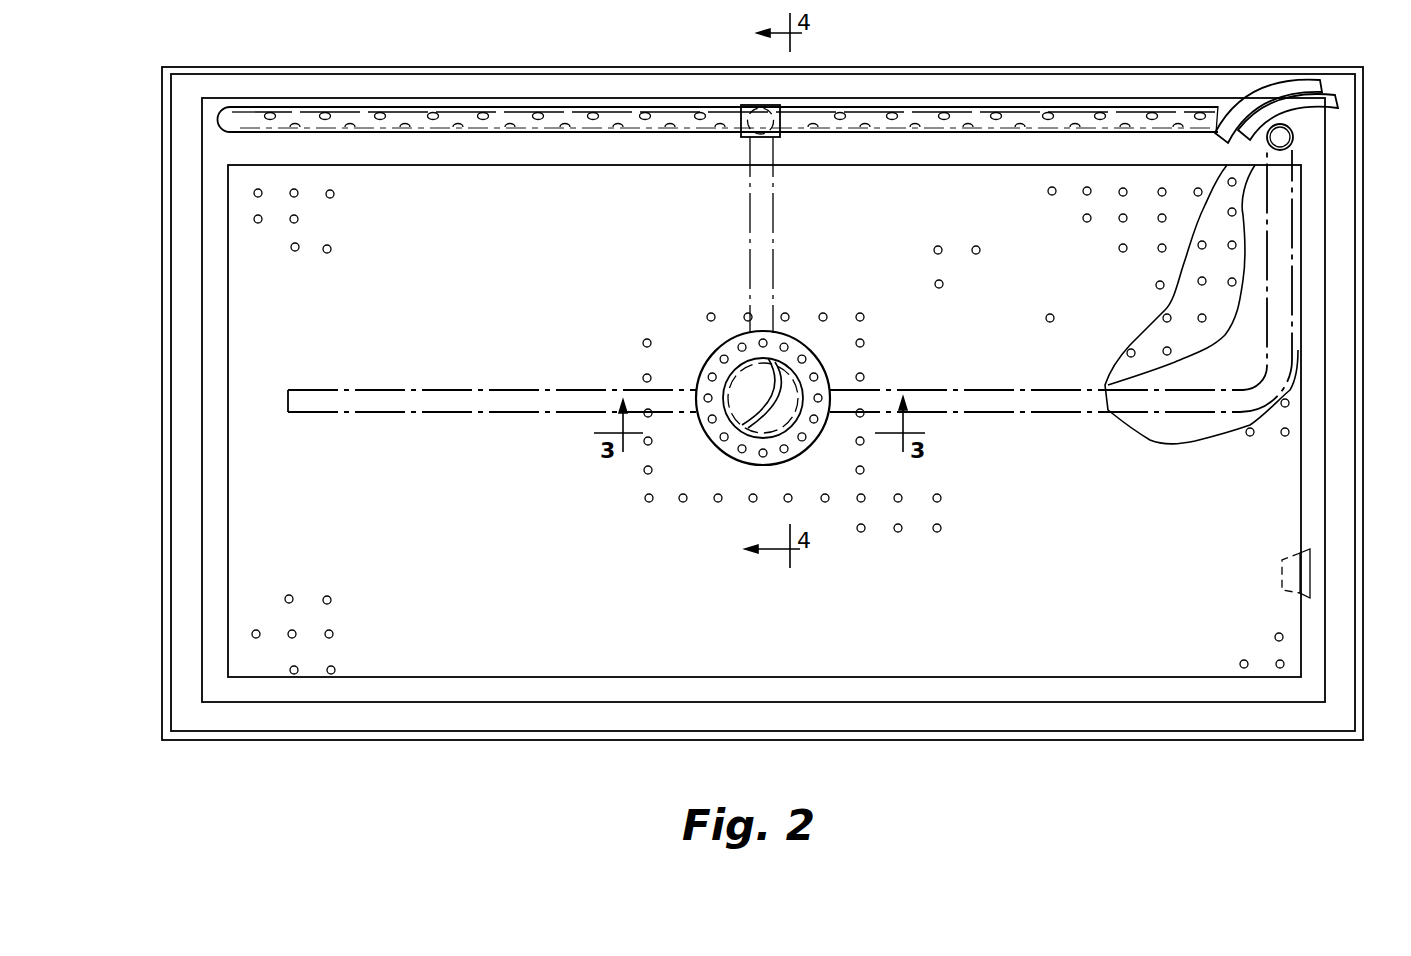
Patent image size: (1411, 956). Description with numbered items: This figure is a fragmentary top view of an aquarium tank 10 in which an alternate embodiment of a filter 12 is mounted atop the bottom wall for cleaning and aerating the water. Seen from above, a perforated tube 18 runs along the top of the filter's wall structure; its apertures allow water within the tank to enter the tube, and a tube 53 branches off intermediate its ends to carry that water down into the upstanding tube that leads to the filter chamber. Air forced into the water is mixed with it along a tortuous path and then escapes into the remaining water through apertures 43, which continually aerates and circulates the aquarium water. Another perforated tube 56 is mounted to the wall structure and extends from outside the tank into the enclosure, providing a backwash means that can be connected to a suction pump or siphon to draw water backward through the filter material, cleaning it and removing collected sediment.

The aquarium tank 10 is at (236, 67).
The filter 12 is at (252, 301).
The perforated tube 18 is at (515, 108).
The apertures 43 is at (790, 345).
The tube 53 is at (783, 147).
The perforated tube 56 is at (1290, 255).